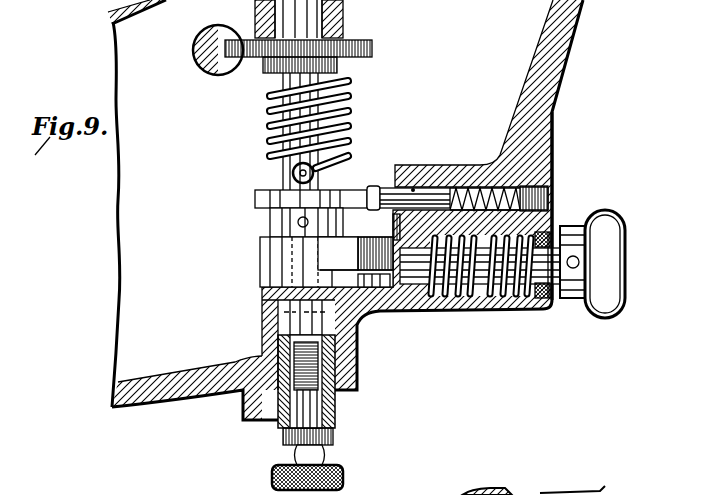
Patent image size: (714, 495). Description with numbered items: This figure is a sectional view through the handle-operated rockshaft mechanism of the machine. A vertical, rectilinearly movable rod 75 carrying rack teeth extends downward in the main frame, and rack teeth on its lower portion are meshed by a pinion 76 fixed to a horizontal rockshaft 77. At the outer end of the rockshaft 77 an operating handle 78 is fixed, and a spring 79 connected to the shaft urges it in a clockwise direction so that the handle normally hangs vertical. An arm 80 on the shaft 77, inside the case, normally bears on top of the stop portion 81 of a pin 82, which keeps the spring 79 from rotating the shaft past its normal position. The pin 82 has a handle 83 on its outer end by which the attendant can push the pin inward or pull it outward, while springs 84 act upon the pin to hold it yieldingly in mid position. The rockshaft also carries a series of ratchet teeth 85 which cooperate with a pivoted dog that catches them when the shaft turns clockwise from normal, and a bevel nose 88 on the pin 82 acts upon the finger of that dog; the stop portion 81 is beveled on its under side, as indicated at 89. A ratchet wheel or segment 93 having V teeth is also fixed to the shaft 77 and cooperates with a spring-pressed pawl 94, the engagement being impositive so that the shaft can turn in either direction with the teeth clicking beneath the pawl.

The vertical rod 75 is at (200, 63).
The pinion 76 is at (362, 39).
The horizontal rockshaft 77 is at (325, 178).
The operating handle 78 is at (340, 413).
The spring 79 is at (335, 113).
The arm 80 is at (352, 250).
The stop portion 81 is at (397, 300).
The pin 82 is at (452, 312).
The handle 83 is at (613, 240).
The springs 84 is at (553, 215).
The ratchet teeth 85 is at (302, 267).
The bevel nose 88 is at (367, 295).
The bevel 89 is at (400, 240).
The ratchet wheel 93 is at (262, 197).
The spring-pressed pawl 94 is at (432, 185).